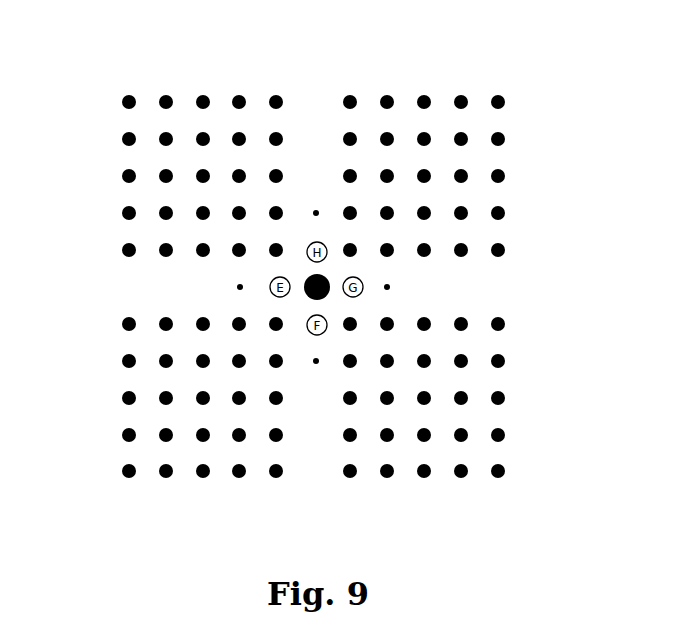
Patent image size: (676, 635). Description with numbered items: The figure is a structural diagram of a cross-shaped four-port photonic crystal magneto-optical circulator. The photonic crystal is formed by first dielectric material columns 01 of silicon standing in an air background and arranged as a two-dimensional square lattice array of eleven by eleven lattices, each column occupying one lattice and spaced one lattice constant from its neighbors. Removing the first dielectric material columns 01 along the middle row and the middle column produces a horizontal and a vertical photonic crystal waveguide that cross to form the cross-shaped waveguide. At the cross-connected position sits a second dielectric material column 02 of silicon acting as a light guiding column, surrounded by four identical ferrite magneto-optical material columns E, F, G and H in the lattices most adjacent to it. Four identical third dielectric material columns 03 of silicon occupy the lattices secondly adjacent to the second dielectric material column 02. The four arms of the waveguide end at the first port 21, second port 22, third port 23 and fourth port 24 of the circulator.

The first dielectric material column 01 is at (497, 92).
The second dielectric material column 02 is at (189, 276).
The third dielectric material column 03 is at (295, 453).
The first port 21 is at (130, 287).
The second port 22 is at (315, 467).
The third port 23 is at (495, 286).
The fourth port 24 is at (316, 110).